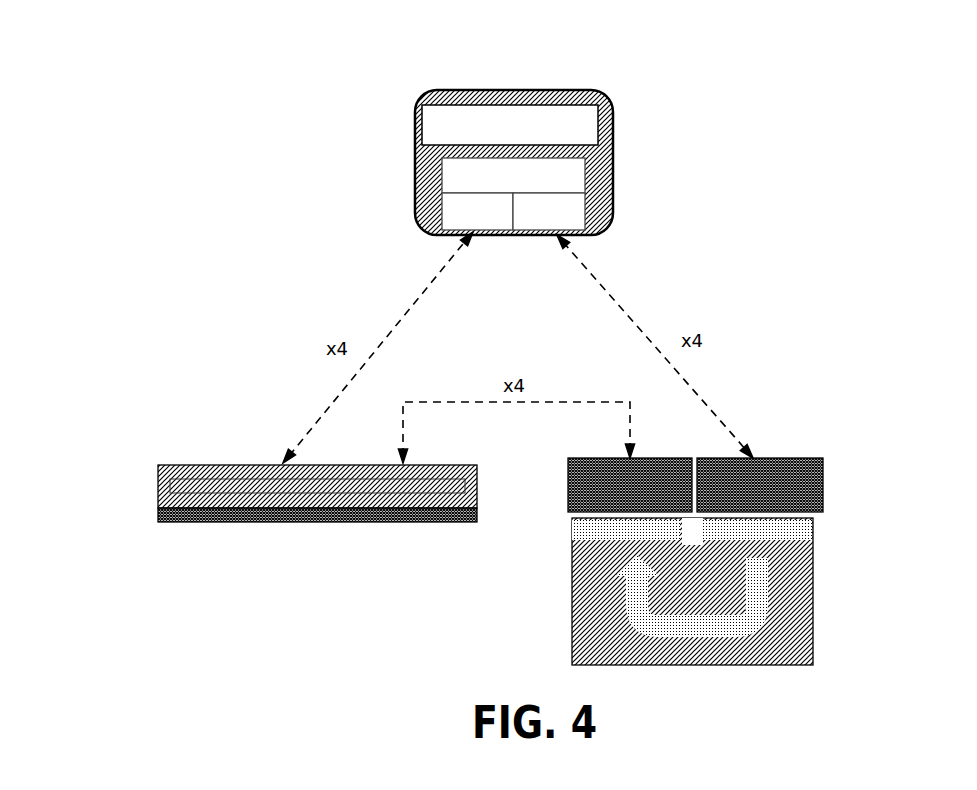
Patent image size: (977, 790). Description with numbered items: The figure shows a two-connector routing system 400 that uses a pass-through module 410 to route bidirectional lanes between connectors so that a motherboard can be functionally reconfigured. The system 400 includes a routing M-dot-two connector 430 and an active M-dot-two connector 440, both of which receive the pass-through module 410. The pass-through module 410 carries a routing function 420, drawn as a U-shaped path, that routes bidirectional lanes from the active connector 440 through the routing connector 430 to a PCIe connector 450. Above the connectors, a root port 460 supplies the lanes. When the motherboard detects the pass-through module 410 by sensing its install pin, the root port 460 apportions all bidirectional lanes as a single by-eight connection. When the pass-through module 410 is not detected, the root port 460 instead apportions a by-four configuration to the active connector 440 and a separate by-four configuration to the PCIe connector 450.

The two-connector routing system 400 is at (853, 70).
The pass-through module 410 is at (810, 587).
The routing function 420 is at (758, 615).
The routing M.2 connector 430 is at (603, 458).
The active M.2 connector 440 is at (787, 458).
The PCIe connector 450 is at (345, 518).
The root port 460 is at (612, 145).